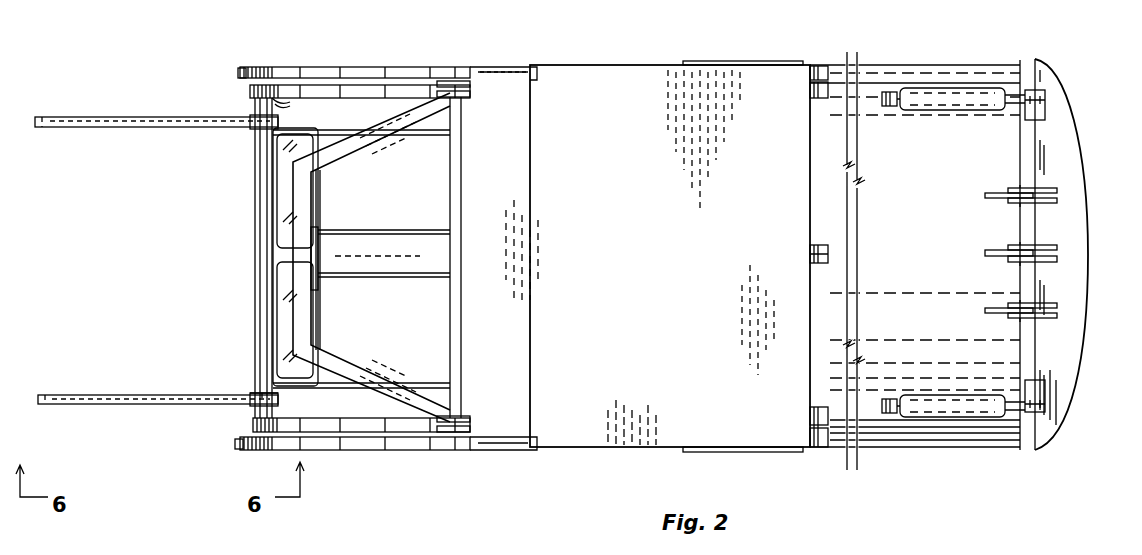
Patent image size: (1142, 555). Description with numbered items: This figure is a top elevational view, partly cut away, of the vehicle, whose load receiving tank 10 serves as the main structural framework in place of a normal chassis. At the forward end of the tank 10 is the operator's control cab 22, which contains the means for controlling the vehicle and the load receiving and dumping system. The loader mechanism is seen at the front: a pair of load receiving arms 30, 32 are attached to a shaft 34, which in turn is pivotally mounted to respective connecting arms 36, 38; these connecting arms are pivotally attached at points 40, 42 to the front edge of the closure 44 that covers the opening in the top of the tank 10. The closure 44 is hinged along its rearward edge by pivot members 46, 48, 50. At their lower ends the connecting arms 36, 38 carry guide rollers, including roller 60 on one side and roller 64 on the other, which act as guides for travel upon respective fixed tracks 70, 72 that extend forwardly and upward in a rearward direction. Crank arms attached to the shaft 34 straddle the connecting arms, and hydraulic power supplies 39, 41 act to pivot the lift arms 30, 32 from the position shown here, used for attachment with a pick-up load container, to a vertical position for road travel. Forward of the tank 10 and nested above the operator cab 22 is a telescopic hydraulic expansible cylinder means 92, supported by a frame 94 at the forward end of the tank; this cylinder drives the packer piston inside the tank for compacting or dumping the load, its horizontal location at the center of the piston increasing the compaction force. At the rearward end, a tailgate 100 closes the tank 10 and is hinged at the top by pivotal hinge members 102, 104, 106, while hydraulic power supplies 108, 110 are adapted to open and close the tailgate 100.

The load receiving tank 10 is at (942, 247).
The operator's control cab 22 is at (313, 390).
The load receiving arm 30 is at (111, 403).
The load receiving arm 32 is at (133, 124).
The shaft 34 is at (260, 246).
The connecting arm 36 is at (346, 432).
The connecting arm 38 is at (365, 82).
The hydraulic power supply 39 is at (258, 406).
The pivot attachment 40 is at (454, 434).
The hydraulic power supply 41 is at (288, 103).
The pivot attachment 42 is at (456, 80).
The closure 44 is at (626, 314).
The pivot member 46 is at (820, 66).
The pivot member 48 is at (810, 264).
The pivot member 50 is at (834, 448).
The guide roller 60 is at (240, 444).
The guide roller 64 is at (242, 66).
The fixed track 70 is at (400, 450).
The fixed track 72 is at (410, 68).
The telescopic hydraulic expansible cylinder means 92 is at (394, 248).
The frame 94 is at (330, 156).
The tailgate 100 is at (1078, 218).
The pivotal hinge member 102 is at (1048, 194).
The pivotal hinge member 104 is at (1010, 256).
The pivotal hinge member 106 is at (1035, 318).
The hydraulic power supply 108 is at (958, 97).
The hydraulic power supply 110 is at (960, 416).